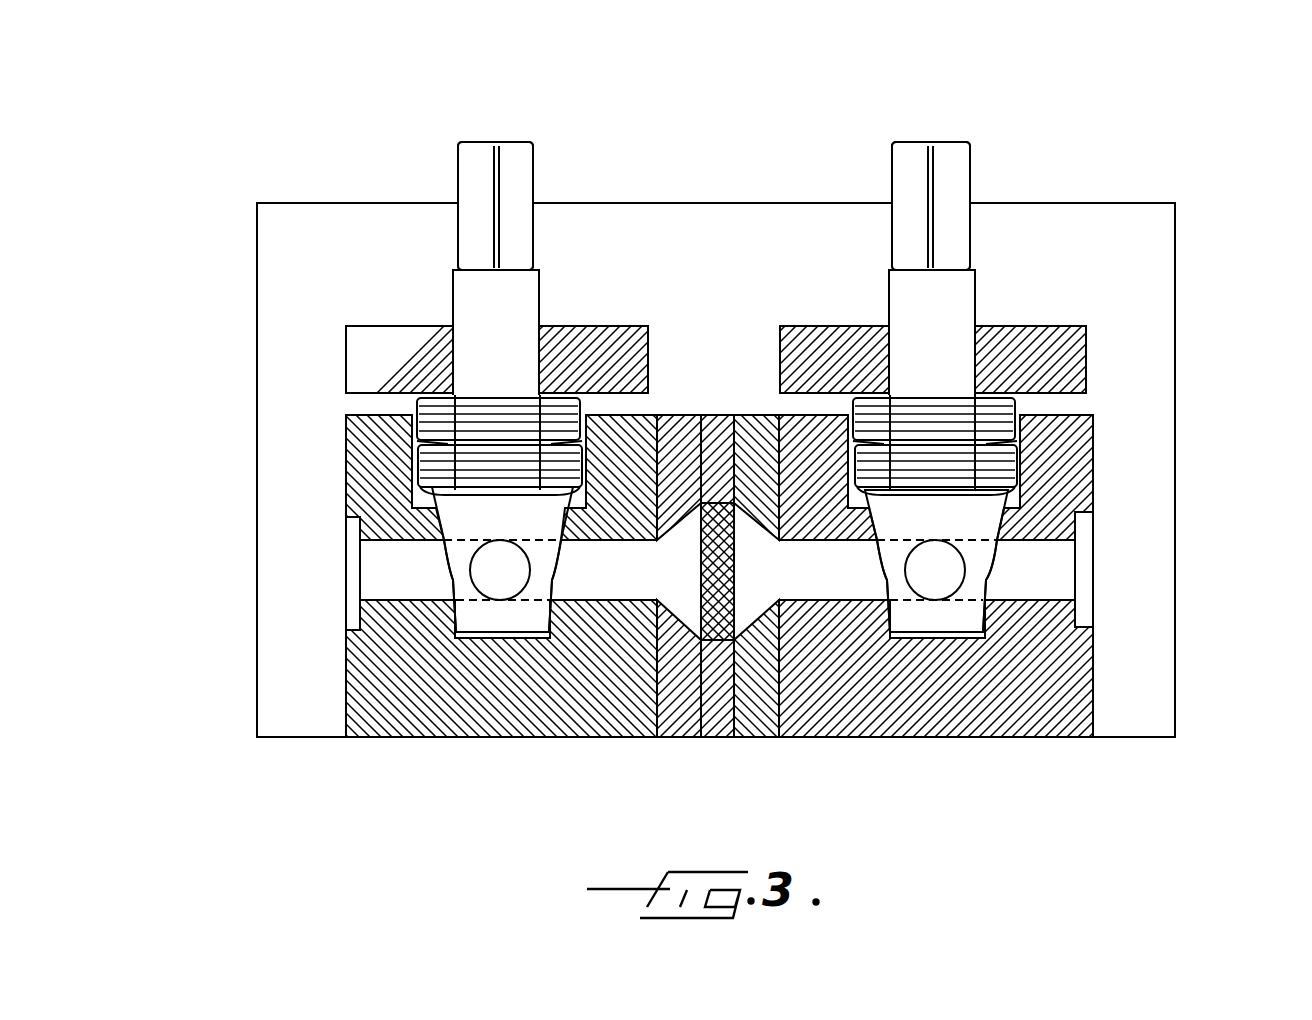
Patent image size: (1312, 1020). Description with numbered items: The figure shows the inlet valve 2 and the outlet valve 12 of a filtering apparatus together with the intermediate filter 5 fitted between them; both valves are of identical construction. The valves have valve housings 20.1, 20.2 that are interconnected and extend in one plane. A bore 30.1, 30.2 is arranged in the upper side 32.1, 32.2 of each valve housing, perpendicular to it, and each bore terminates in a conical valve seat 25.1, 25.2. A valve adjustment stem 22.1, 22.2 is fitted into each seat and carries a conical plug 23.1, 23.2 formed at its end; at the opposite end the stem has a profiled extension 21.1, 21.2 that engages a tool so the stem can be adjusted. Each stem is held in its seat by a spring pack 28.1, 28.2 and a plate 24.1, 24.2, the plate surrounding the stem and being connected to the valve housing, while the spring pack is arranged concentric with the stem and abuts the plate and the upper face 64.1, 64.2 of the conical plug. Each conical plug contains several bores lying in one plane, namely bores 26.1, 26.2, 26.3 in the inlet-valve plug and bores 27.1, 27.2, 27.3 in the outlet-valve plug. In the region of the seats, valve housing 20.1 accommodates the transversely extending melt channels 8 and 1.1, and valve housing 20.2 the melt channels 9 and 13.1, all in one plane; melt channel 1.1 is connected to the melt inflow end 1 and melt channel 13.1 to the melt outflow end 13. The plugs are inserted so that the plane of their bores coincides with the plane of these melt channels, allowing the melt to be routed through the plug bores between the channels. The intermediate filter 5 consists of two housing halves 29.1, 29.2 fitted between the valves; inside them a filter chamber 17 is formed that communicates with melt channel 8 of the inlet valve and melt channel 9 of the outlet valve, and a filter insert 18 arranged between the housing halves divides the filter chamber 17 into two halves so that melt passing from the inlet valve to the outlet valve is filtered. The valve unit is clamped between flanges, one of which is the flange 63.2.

The melt inflow end 1 is at (1093, 578).
The melt channel 1.1 is at (1063, 553).
The inlet valve 2 is at (1047, 160).
The intermediate filter 5 is at (722, 157).
The melt channel 8 is at (818, 587).
The melt channel 9 is at (620, 585).
The outlet valve 12 is at (432, 137).
The melt outflow end 13 is at (350, 555).
The melt channel 13.1 is at (373, 583).
The filter chamber 17 is at (678, 527).
The filter insert 18 is at (706, 413).
The valve housing 20.1 is at (1023, 705).
The valve housing 20.2 is at (362, 708).
The profiled extension 21.1 is at (960, 230).
The profiled extension 21.2 is at (470, 183).
The valve adjustment stem 22.1 is at (967, 290).
The valve adjustment stem 22.2 is at (463, 288).
The conical plug 23.1 is at (993, 520).
The conical plug 23.2 is at (440, 525).
The plate 24.1 is at (1067, 328).
The plate 24.2 is at (350, 345).
The conical valve seat 25.1 is at (987, 620).
The conical valve seat 25.2 is at (452, 623).
The bore 26.1 is at (947, 587).
The bore 26.2 is at (985, 587).
The bore 26.3 is at (880, 587).
The bore 27.1 is at (495, 587).
The bore 27.2 is at (453, 575).
The bore 27.3 is at (553, 577).
The spring pack 28.1 is at (1038, 405).
The spring pack 28.2 is at (352, 432).
The housing half 29.1 is at (765, 725).
The housing half 29.2 is at (687, 720).
The bore 30.1 is at (1025, 503).
The bore 30.2 is at (420, 455).
The upper side 32.1 is at (1072, 415).
The upper side 32.2 is at (413, 427).
The flange 63.2 is at (1157, 408).
The upper face 64.1 is at (1010, 468).
The upper face 64.2 is at (430, 485).